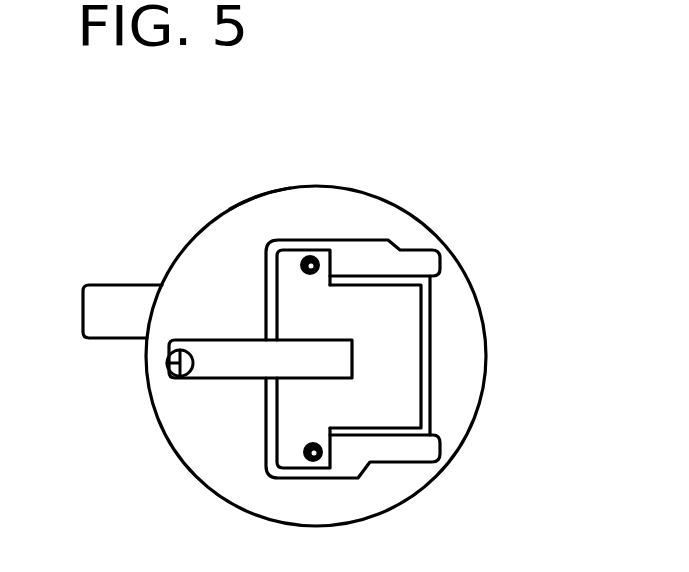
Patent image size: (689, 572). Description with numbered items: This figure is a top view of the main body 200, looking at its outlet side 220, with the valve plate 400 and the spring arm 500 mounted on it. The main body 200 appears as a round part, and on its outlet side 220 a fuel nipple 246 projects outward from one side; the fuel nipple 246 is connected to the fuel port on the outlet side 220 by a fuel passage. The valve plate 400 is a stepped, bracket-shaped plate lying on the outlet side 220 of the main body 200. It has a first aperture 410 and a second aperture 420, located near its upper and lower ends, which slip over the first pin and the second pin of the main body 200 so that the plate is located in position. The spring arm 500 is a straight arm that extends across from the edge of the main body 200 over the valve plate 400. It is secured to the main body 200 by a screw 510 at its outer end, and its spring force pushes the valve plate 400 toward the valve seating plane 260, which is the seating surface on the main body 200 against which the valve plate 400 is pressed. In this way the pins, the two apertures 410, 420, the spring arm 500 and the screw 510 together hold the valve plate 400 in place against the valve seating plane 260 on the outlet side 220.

The main body 200 is at (380, 200).
The outlet side 220 is at (253, 215).
The fuel nipple 246 is at (147, 258).
The valve seating plane 260 is at (433, 360).
The valve plate 400 is at (405, 328).
The first aperture 410 is at (302, 266).
The second aperture 420 is at (304, 452).
The spring arm 500 is at (213, 368).
The screw 510 is at (167, 364).